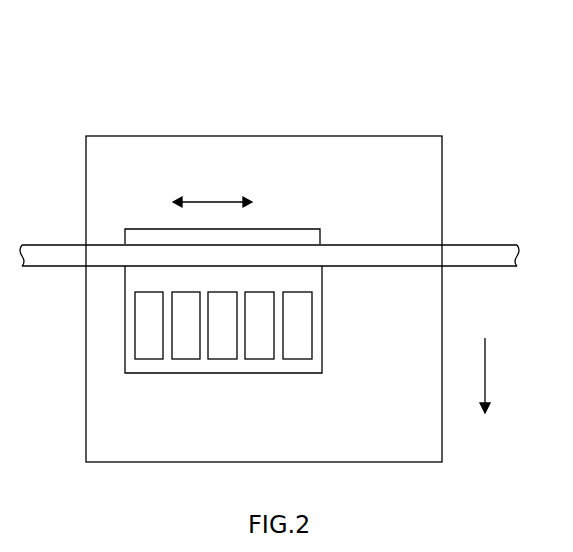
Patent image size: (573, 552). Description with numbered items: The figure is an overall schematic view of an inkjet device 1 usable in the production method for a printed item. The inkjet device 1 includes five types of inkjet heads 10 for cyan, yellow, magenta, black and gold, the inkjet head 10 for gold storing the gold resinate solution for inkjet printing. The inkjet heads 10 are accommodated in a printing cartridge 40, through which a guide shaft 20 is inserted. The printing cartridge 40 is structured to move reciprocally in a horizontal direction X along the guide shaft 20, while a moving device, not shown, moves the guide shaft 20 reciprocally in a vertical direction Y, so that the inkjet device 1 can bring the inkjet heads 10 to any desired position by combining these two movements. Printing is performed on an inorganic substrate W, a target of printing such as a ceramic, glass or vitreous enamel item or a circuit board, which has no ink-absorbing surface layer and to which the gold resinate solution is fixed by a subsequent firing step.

The inkjet device 1 is at (442, 82).
The inorganic substrate W is at (428, 157).
The guide shaft 20 is at (480, 250).
The printing cartridge 40 is at (287, 237).
The inkjet heads 10 is at (186, 354).